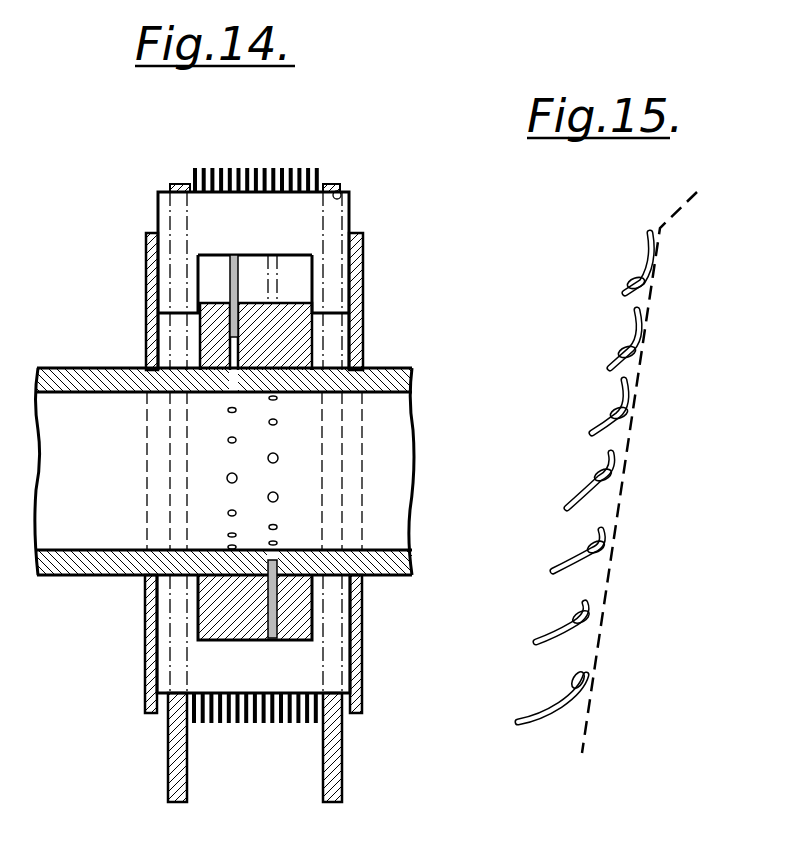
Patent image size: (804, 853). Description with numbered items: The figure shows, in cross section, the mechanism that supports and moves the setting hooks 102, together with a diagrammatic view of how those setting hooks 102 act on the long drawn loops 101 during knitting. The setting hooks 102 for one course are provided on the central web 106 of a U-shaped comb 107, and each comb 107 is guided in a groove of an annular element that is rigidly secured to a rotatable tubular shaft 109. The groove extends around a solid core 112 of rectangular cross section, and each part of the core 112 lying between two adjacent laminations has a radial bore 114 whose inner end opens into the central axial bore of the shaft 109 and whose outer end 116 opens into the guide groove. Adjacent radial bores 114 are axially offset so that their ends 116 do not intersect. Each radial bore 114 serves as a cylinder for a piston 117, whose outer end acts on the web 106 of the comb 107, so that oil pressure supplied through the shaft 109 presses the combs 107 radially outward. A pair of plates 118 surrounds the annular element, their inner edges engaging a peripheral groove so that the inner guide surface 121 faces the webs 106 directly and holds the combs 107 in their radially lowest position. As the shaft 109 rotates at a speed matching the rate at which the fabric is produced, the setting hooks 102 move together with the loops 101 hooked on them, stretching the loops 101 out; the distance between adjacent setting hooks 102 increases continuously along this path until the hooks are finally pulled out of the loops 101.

In FIG. 15, the loop 101 is at (592, 665).
In FIG. 14, the setting hook 102 is at (238, 168).
In FIG. 15, the setting hook 102 is at (652, 263).
In FIG. 14, the central web 106 is at (272, 220).
In FIG. 14, the U-shaped comb 107 is at (356, 206).
In FIG. 14, the tubular shaft 109 is at (412, 379).
In FIG. 14, the solid core 112 is at (302, 608).
In FIG. 14, the radial bore 114 is at (233, 357).
In FIG. 14, the end of radial bore 116 is at (223, 507).
In FIG. 14, the piston 117 is at (233, 280).
In FIG. 14, the plate 118 is at (178, 183).
In FIG. 14, the inner guide surface 121 is at (352, 191).